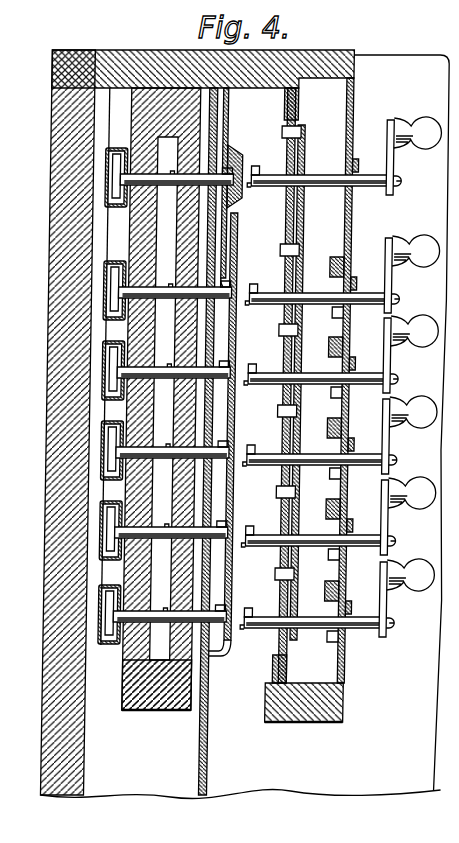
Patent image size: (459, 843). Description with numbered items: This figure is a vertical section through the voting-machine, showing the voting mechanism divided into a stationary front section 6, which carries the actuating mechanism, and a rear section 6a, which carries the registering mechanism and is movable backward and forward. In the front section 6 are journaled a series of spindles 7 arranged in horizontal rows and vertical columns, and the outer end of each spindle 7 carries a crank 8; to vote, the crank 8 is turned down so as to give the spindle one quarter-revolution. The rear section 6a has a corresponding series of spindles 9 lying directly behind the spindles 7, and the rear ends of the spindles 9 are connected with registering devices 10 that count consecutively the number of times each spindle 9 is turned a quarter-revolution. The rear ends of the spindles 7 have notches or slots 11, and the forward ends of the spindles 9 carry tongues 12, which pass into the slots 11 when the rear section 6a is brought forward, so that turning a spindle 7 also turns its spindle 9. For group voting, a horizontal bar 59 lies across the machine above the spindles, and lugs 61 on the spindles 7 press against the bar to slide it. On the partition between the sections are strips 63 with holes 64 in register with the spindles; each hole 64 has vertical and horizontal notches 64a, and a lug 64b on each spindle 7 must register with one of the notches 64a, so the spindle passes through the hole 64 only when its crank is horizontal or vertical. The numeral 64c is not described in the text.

The front section 6 is at (299, 723).
The rear section 6a is at (153, 712).
The spindle 7 is at (366, 388).
The crank 8 is at (419, 478).
The spindle 9 is at (226, 266).
The registering device 10 is at (100, 178).
The notch or slot 11 is at (256, 448).
The tongue 12 is at (229, 520).
The horizontal bar 59 is at (346, 510).
The lug 61 is at (328, 610).
The strip 63 is at (237, 355).
The hole 64 is at (234, 542).
The notch 64a is at (231, 610).
The lug 64b is at (258, 617).
The stop 64c is at (254, 285).